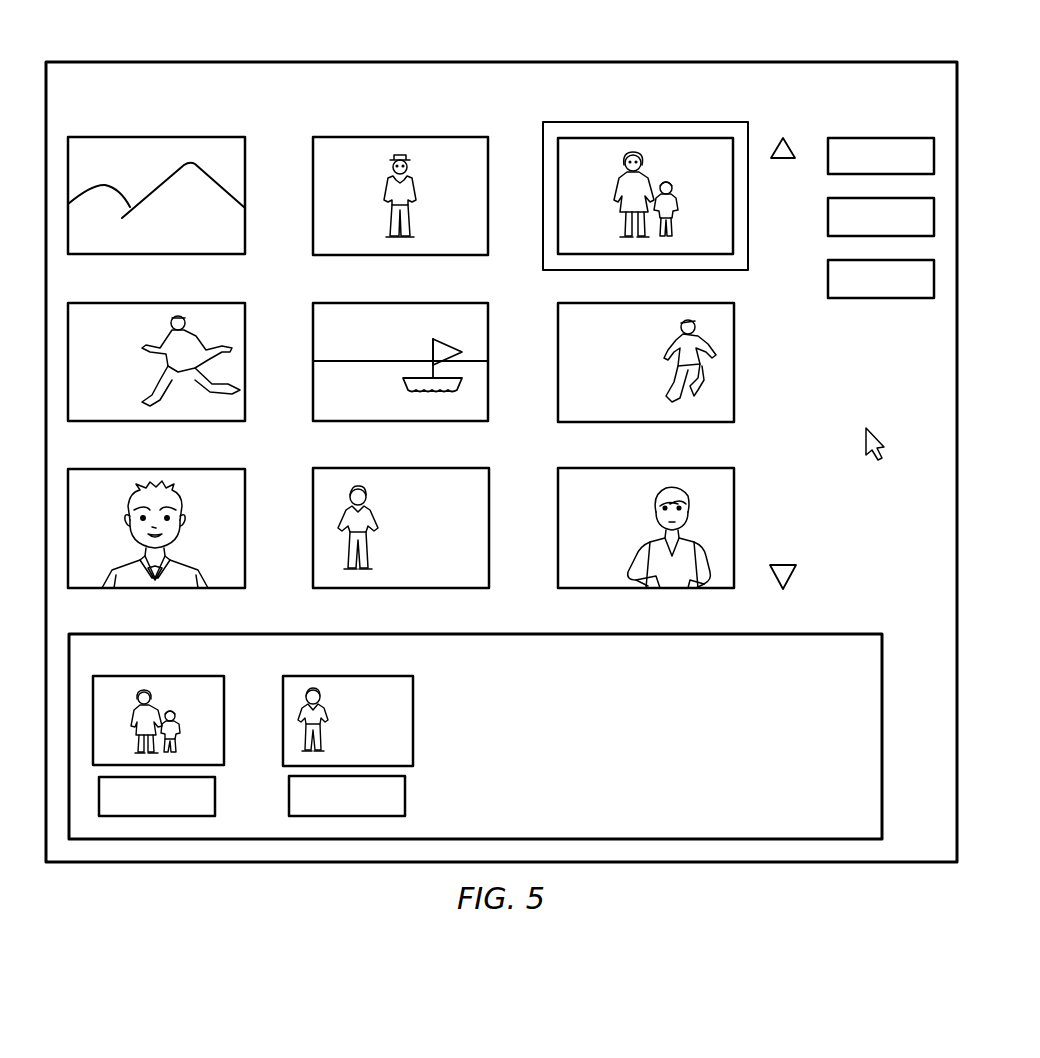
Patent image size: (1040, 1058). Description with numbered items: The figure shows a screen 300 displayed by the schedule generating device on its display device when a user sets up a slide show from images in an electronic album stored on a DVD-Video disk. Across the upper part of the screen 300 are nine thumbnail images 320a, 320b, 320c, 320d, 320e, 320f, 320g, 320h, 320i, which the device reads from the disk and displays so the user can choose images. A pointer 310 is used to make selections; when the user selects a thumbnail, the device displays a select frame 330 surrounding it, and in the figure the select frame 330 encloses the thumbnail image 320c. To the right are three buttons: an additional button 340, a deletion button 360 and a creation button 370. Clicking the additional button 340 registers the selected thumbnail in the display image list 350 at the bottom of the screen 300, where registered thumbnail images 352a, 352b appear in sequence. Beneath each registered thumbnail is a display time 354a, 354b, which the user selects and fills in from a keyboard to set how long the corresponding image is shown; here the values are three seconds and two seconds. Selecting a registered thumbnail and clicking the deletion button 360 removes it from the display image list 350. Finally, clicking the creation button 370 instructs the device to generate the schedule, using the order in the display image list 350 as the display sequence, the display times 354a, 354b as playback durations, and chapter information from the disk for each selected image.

The screen 300 is at (957, 162).
The pointer 310 is at (893, 412).
The thumbnail image 320a is at (158, 137).
The thumbnail image 320b is at (400, 137).
The thumbnail image 320c is at (645, 138).
The thumbnail image 320d is at (158, 303).
The thumbnail image 320e is at (400, 303).
The thumbnail image 320f is at (734, 360).
The thumbnail image 320g is at (158, 469).
The thumbnail image 320h is at (400, 468).
The thumbnail image 320i is at (645, 468).
The select frame 330 is at (748, 236).
The additional button 340 is at (885, 138).
The display image list 350 is at (828, 634).
The thumbnail image 352a is at (160, 676).
The thumbnail image 352b is at (348, 676).
The display time 354a is at (215, 797).
The display time 354b is at (405, 797).
The deletion button 360 is at (828, 216).
The creation button 370 is at (877, 298).